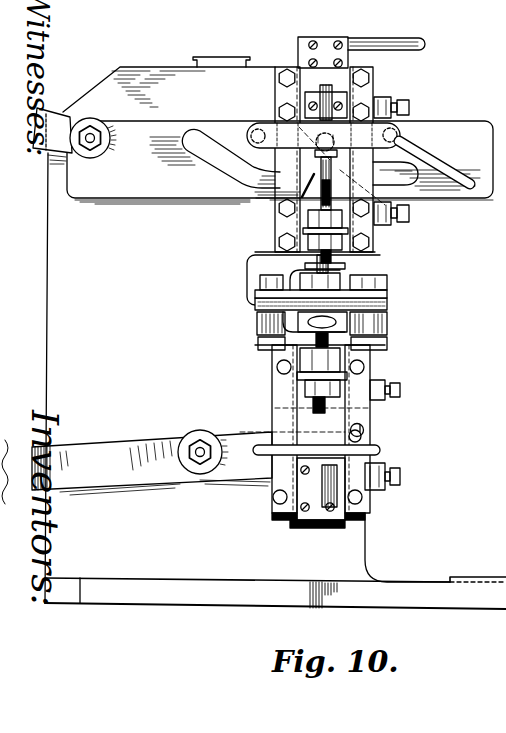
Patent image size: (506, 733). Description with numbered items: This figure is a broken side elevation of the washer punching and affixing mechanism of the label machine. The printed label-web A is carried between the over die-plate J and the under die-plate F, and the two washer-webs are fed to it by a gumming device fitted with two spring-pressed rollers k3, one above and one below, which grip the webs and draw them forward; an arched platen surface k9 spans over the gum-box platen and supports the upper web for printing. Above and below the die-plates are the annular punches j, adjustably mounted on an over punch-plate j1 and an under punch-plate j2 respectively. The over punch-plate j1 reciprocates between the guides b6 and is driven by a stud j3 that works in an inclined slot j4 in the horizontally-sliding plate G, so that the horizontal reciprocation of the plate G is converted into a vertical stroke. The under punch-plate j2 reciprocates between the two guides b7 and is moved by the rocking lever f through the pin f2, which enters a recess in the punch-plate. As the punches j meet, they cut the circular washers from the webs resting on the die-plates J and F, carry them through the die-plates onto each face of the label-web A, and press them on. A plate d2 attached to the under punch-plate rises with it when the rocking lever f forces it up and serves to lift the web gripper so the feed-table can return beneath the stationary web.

The horizontally-sliding plate G is at (280, 161).
The guides b6 is at (380, 72).
The stud j3 is at (290, 124).
The punches j is at (348, 247).
The inclined slot j4 is at (410, 178).
The over punch-plate j1 is at (343, 217).
The under die-plate F is at (387, 309).
The over die-plate J is at (387, 293).
The spring-pressed rollers k3 is at (385, 270).
The arched platen surface k9 is at (388, 284).
The guides b7 is at (388, 509).
The under punch-plate j2 is at (342, 362).
The label-web A is at (247, 297).
The rocking lever f is at (102, 448).
The plate d2 is at (382, 449).
The pin f2 is at (385, 465).